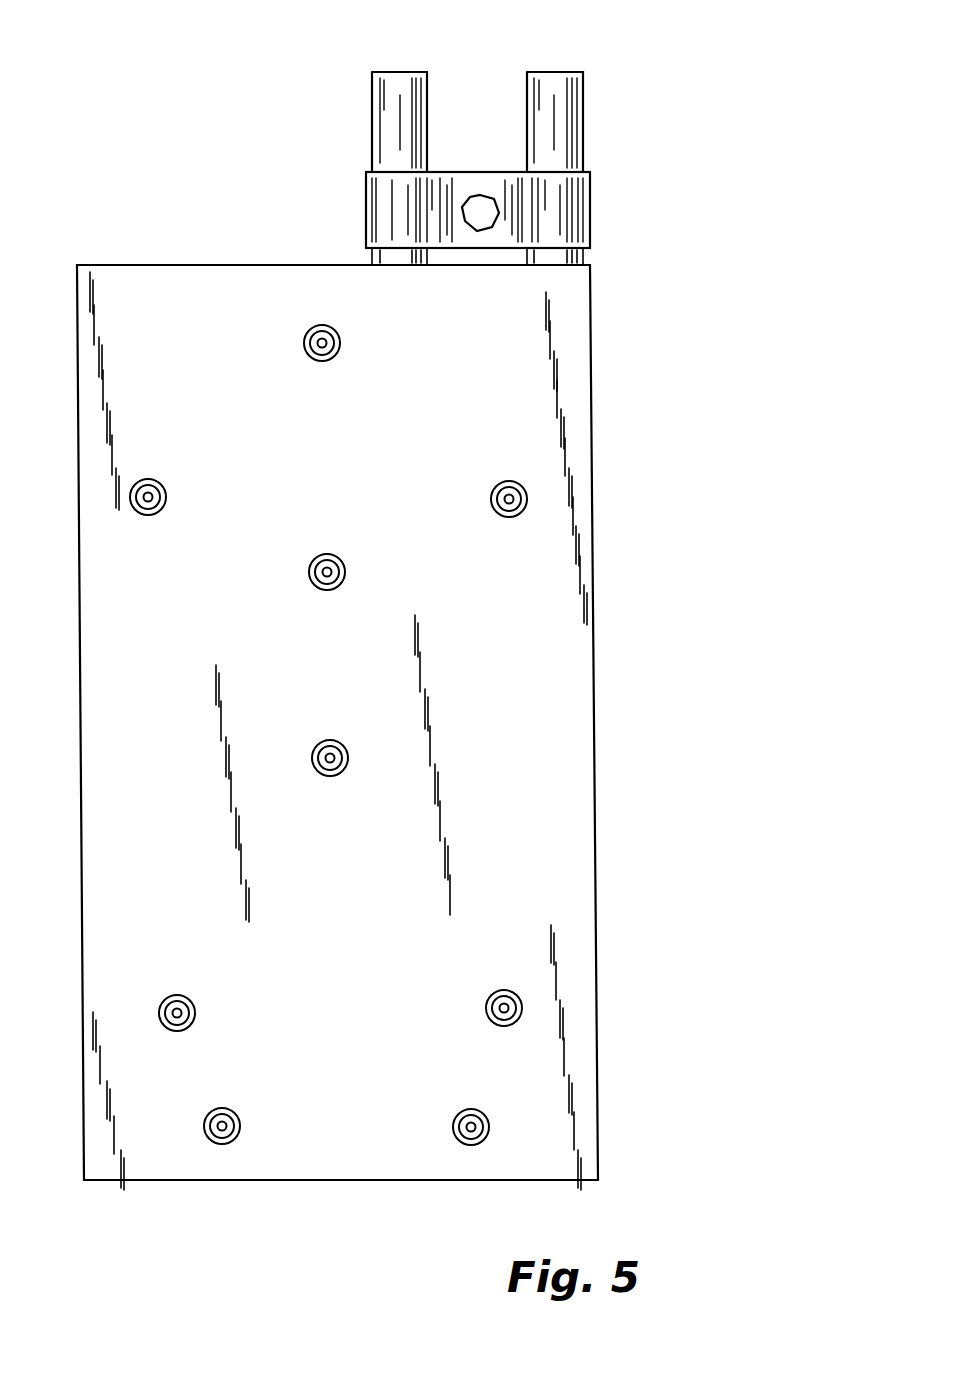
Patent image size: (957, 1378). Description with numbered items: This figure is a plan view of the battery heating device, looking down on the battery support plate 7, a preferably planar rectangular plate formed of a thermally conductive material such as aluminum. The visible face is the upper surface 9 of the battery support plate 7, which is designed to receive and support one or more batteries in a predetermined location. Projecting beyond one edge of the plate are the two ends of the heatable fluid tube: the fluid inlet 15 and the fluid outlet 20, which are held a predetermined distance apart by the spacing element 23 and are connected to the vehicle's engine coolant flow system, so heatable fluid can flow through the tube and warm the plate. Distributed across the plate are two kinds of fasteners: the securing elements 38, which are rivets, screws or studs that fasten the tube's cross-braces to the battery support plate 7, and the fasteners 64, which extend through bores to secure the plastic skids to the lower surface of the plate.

The battery support plate 7 is at (357, 601).
The upper surface 9 is at (127, 1097).
The fluid inlet 15 is at (549, 71).
The fluid outlet 20 is at (392, 71).
The spacing element 23 is at (555, 208).
The securing elements 38 is at (148, 516).
The fasteners 64 is at (339, 335).